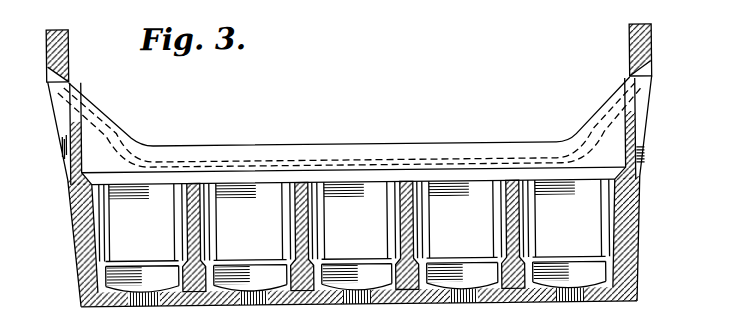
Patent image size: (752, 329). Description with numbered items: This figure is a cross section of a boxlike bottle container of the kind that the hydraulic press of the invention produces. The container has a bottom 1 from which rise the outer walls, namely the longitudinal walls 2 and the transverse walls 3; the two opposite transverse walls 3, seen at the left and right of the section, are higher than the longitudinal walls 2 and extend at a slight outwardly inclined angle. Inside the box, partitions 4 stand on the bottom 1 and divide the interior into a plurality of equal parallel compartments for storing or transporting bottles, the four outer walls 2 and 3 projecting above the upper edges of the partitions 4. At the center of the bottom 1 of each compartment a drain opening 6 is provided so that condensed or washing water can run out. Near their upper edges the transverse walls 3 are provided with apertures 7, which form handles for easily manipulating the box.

The bottom 1 is at (309, 305).
The longitudinal walls 2 is at (347, 156).
The transverse walls 3 is at (82, 228).
The partitions 4 is at (190, 229).
The drain opening 6 is at (152, 308).
The apertures 7 is at (72, 85).